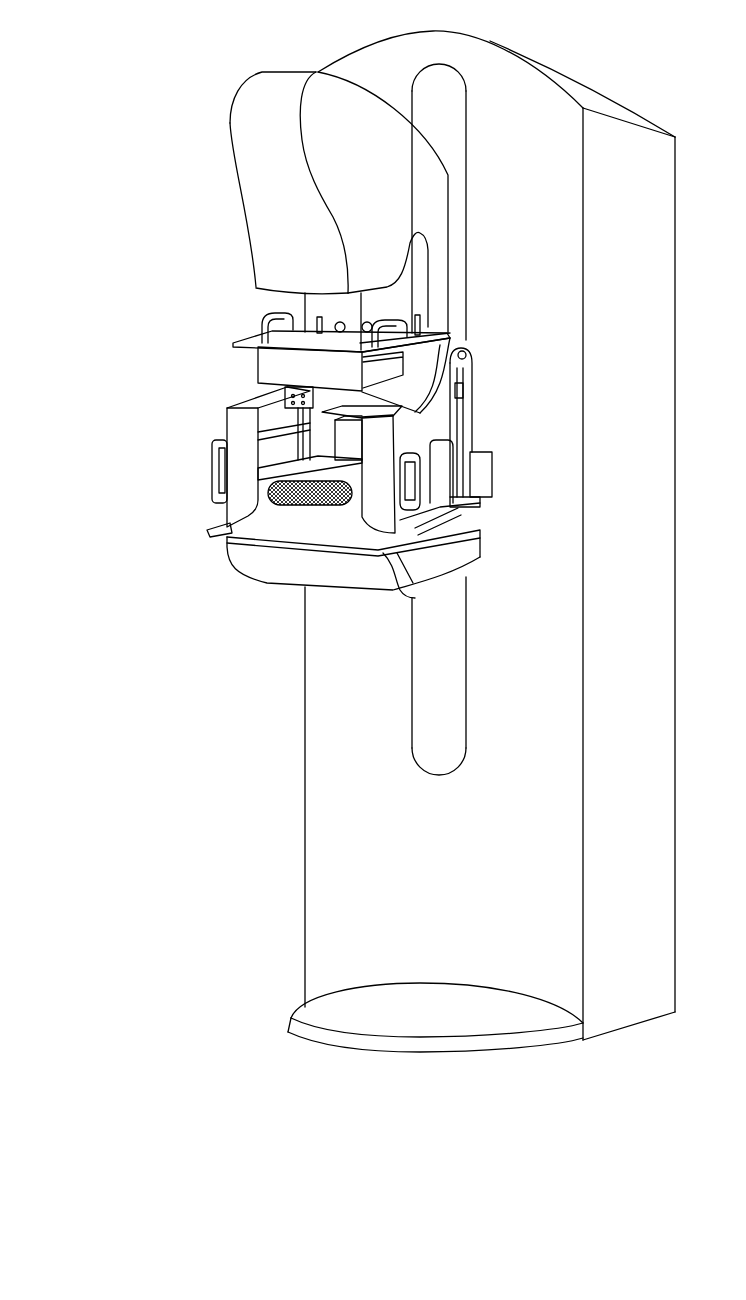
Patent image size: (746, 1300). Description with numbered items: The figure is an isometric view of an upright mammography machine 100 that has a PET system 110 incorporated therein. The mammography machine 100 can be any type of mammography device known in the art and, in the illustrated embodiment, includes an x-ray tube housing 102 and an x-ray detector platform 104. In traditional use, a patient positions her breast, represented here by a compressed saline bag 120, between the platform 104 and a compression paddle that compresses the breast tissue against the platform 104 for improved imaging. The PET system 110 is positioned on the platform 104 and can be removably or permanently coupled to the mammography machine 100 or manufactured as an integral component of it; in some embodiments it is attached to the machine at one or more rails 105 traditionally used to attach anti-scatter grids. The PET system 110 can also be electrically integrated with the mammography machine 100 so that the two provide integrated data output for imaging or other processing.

The mammography machine 100 is at (100, 114).
The x-ray tube housing 102 is at (293, 212).
The x-ray detector platform 104 is at (237, 567).
The rails 105 is at (416, 598).
The PET system 110 is at (172, 442).
The compressed saline bag 120 is at (258, 498).